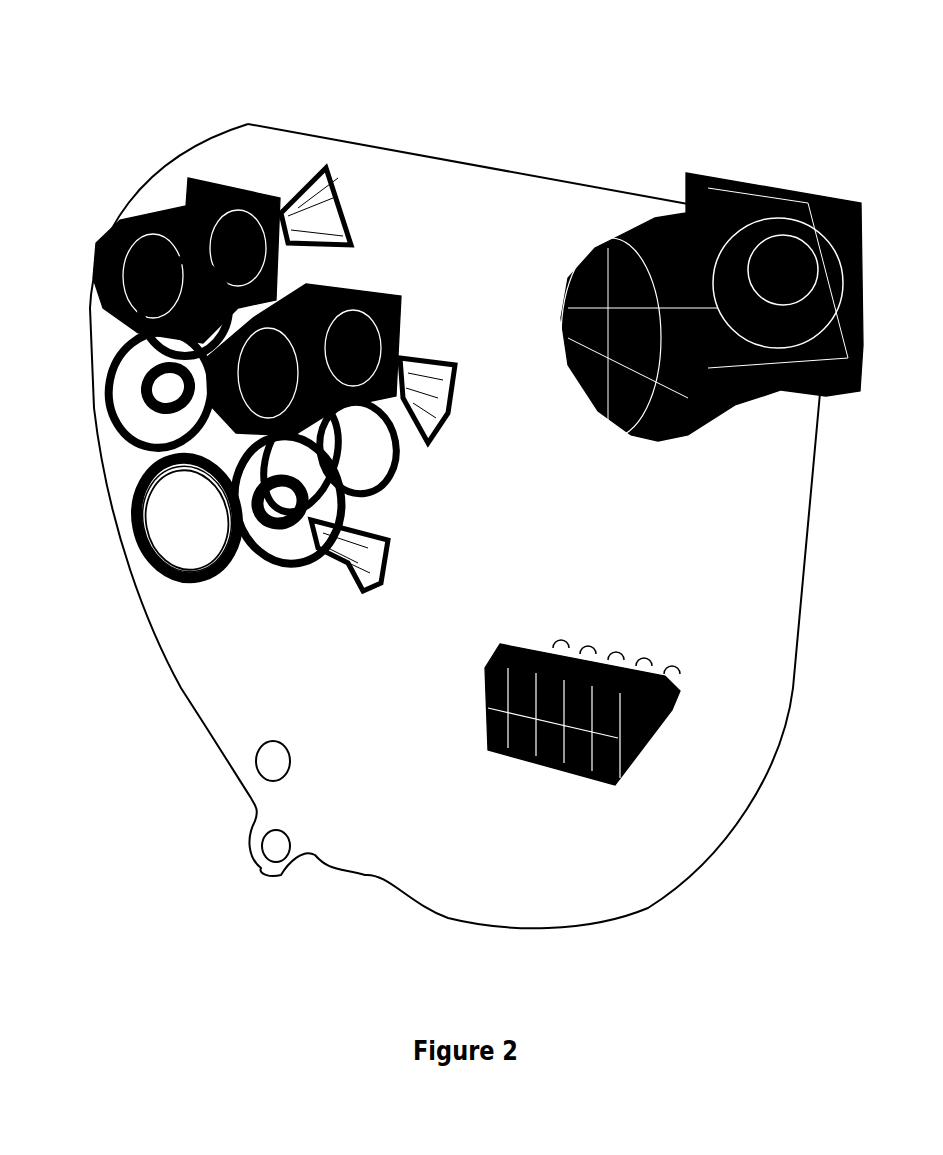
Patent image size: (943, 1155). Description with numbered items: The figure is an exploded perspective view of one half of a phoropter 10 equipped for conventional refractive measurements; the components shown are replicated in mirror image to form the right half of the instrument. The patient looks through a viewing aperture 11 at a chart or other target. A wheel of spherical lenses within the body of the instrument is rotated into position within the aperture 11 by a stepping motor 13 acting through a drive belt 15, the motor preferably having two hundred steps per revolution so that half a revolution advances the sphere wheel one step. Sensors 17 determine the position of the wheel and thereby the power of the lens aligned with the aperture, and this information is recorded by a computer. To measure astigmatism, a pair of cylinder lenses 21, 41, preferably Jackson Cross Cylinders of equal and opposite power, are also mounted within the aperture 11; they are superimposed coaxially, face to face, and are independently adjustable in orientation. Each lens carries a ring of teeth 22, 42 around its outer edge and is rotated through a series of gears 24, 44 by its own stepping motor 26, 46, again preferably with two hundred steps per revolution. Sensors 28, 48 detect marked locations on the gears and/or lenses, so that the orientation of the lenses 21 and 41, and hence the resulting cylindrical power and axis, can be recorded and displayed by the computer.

The phoropter 10 is at (414, 112).
The viewing aperture 11 is at (160, 535).
The stepping motor 13 is at (622, 230).
The drive belt 15 is at (803, 535).
The sensors 17 is at (647, 748).
The cylinder lens 21 is at (157, 563).
The ring of teeth 22 is at (175, 572).
The gears 24 is at (93, 377).
The stepping motor 26 is at (165, 200).
The sensors 28 is at (238, 330).
The cylinder lens 41 is at (240, 533).
The ring of teeth 42 is at (230, 557).
The gears 44 is at (393, 440).
The stepping motor 46 is at (255, 330).
The sensors 48 is at (447, 370).